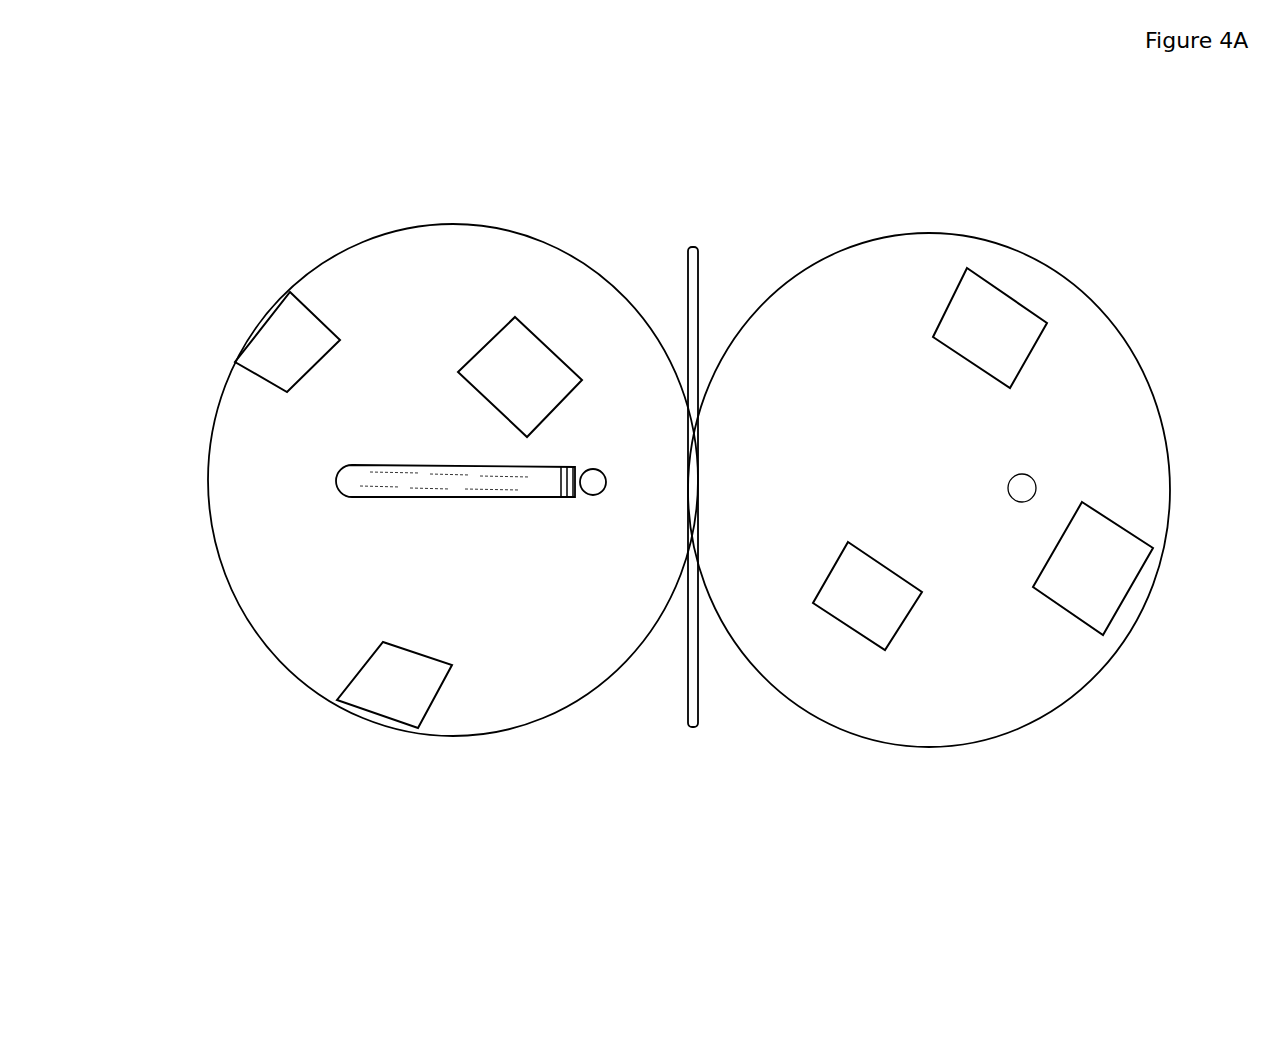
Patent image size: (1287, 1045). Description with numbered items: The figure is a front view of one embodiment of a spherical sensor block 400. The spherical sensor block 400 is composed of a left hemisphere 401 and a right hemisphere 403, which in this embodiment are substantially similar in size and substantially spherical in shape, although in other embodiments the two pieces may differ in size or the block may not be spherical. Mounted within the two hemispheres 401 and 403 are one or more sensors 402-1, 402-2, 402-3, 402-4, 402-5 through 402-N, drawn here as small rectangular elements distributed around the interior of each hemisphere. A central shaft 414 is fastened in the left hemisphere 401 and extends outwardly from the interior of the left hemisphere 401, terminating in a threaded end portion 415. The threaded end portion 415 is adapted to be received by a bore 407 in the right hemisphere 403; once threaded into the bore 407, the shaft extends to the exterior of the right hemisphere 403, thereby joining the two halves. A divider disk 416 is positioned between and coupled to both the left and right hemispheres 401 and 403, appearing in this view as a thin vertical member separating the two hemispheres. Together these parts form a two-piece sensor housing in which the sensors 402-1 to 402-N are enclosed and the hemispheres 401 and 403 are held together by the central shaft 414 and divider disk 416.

The spherical sensor block 400 is at (1092, 872).
The left hemisphere 401 is at (383, 238).
The right hemisphere 403 is at (908, 233).
The sensor 402-1 is at (1113, 568).
The sensor 402-2 is at (860, 622).
The sensor 402-3 is at (1008, 317).
The sensor 402-4 is at (275, 335).
The sensor 402-5 is at (528, 358).
The sensor 402-N is at (383, 693).
The bore 407 is at (1035, 483).
The central shaft 414 is at (505, 500).
The threaded end portion 415 is at (572, 500).
The divider disk 416 is at (693, 727).